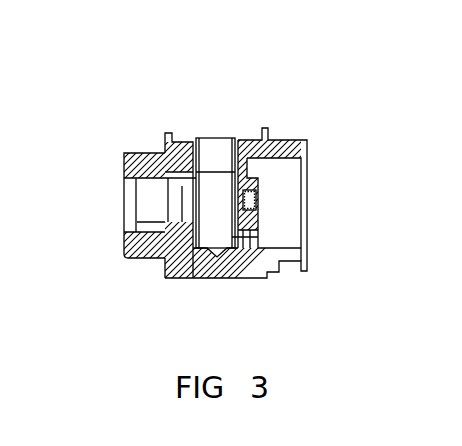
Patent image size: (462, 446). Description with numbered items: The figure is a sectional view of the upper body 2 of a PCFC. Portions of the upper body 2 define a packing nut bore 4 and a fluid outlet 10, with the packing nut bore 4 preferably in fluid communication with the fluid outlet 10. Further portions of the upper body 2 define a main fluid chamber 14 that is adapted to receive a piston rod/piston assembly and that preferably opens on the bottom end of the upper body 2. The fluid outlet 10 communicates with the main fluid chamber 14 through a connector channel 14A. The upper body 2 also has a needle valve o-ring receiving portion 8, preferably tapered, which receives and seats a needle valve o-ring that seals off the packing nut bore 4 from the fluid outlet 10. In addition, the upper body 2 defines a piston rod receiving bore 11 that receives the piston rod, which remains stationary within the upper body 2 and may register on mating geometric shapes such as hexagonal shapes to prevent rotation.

The upper body 2 is at (236, 104).
The packing nut bore 4 is at (129, 196).
The needle valve o-ring receiving portion 8 is at (172, 185).
The fluid outlet 10 is at (212, 147).
The piston rod receiving bore 11 is at (255, 208).
The main fluid chamber 14 is at (282, 172).
The connector channel 14A is at (243, 243).